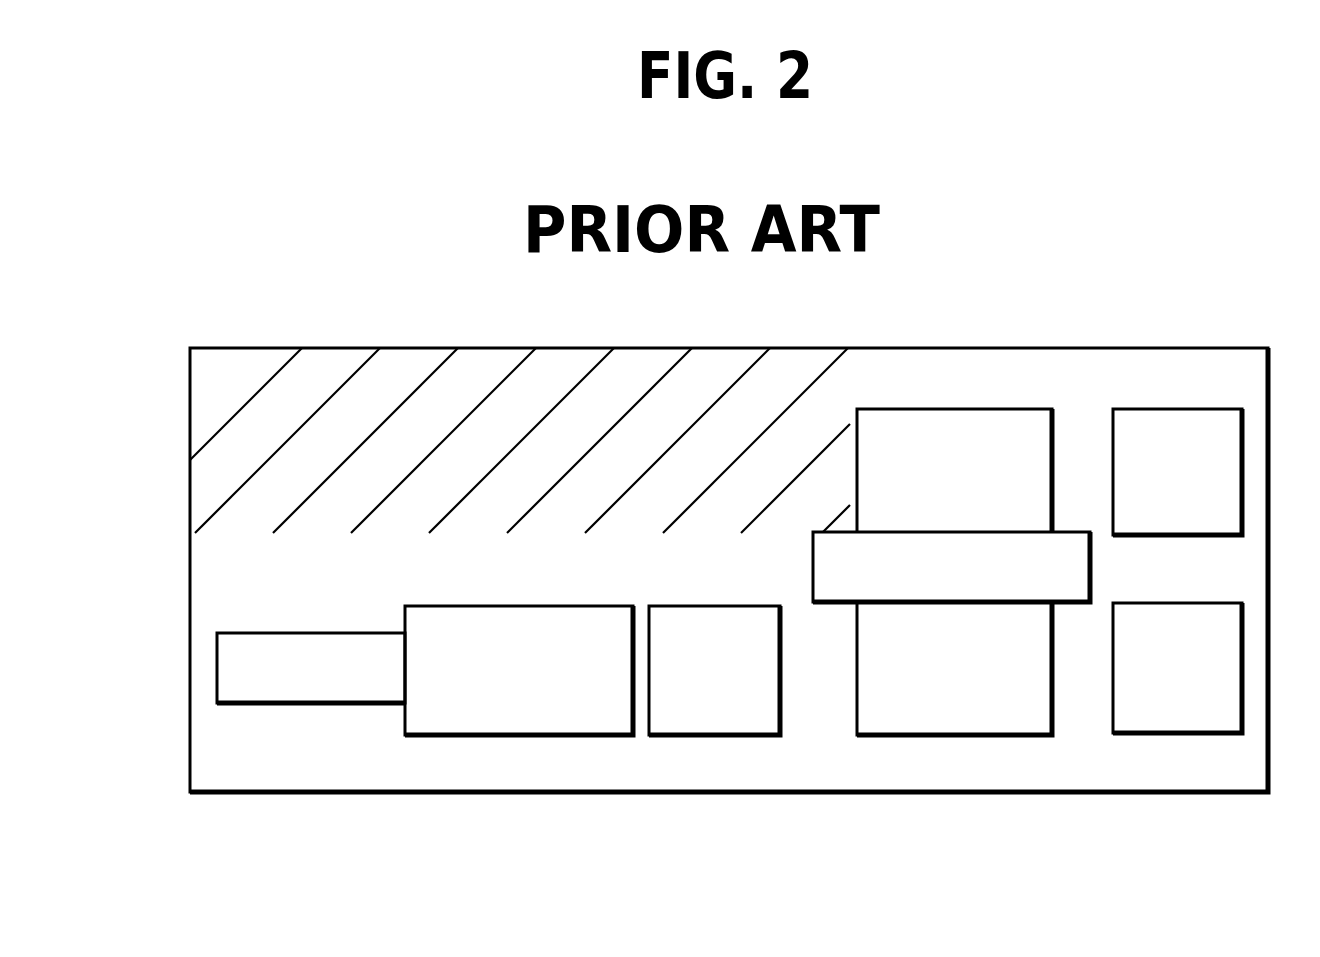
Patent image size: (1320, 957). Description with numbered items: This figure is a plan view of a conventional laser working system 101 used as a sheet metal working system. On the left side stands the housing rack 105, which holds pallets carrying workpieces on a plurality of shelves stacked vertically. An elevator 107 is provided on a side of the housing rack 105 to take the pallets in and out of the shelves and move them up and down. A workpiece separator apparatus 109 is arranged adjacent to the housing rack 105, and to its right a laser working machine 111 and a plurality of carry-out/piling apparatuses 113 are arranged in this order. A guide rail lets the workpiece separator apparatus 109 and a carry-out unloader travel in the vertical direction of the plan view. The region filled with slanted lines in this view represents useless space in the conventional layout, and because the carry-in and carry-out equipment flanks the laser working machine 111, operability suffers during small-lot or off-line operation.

The laser working system 101 is at (959, 339).
The housing rack 105 is at (522, 710).
The elevator 107 is at (313, 687).
The workpiece separator apparatus 109 is at (713, 710).
The laser working machine 111 is at (957, 705).
The carry-out/piling apparatus 113 is at (1174, 428).